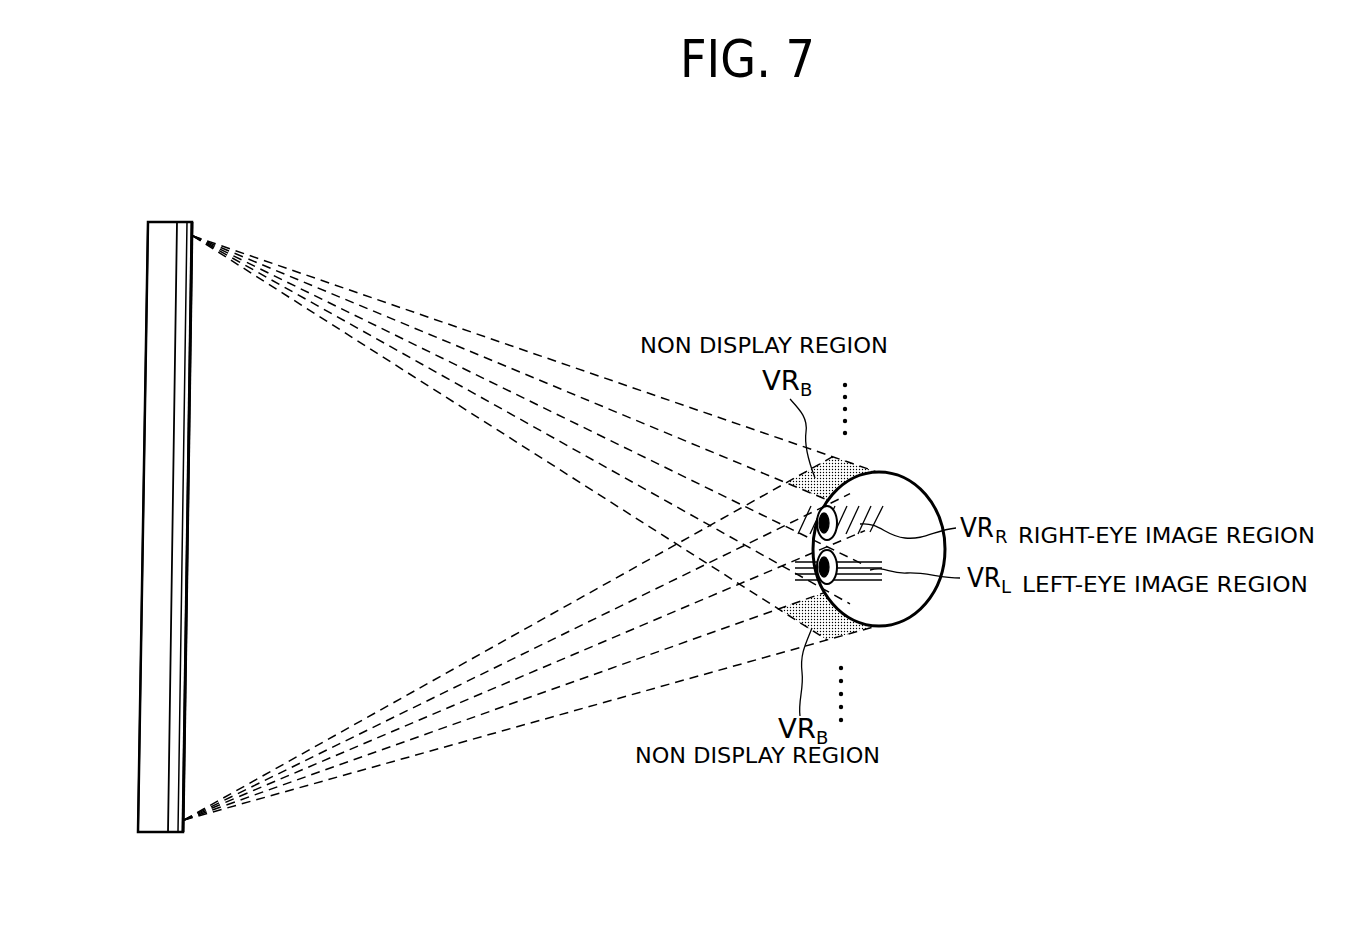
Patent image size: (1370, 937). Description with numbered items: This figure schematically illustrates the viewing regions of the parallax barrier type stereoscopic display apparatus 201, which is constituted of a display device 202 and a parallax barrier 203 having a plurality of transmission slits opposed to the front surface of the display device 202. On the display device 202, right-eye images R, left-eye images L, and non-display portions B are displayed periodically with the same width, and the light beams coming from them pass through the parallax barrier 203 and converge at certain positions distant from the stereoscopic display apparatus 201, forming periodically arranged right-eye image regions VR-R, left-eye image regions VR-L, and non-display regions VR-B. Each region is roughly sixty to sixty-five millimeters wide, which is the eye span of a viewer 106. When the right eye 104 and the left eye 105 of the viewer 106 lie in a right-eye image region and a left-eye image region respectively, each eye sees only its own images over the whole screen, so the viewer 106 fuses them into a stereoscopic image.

The stereoscopic display apparatus 201 is at (181, 212).
The display device 202 is at (157, 818).
The parallax barrier 203 is at (187, 597).
The right eye 104 is at (822, 508).
The left eye 105 is at (838, 590).
The viewer 106 is at (888, 645).